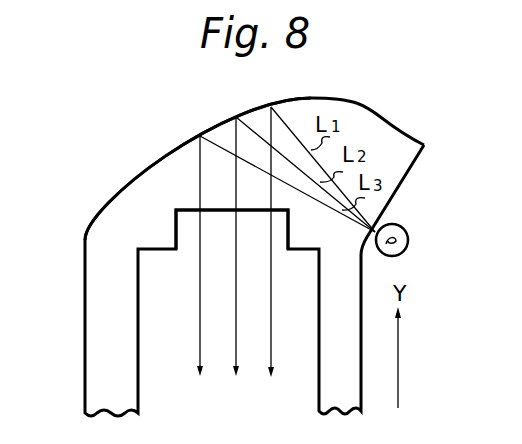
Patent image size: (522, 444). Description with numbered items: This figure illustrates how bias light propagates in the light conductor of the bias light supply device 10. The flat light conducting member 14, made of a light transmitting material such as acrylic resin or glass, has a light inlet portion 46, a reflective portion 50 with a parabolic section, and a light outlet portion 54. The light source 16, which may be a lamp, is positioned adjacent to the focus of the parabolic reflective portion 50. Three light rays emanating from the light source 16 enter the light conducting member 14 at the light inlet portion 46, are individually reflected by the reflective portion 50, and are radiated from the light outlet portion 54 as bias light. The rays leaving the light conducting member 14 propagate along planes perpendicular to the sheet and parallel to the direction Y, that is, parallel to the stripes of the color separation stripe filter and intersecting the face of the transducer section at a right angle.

The bias light supply device 10 is at (431, 133).
The flat light conducting member 14 is at (85, 329).
The light source 16 is at (408, 244).
The light inlet portion 46 is at (409, 180).
The reflective portion 50 is at (222, 122).
The light outlet portion 54 is at (215, 212).